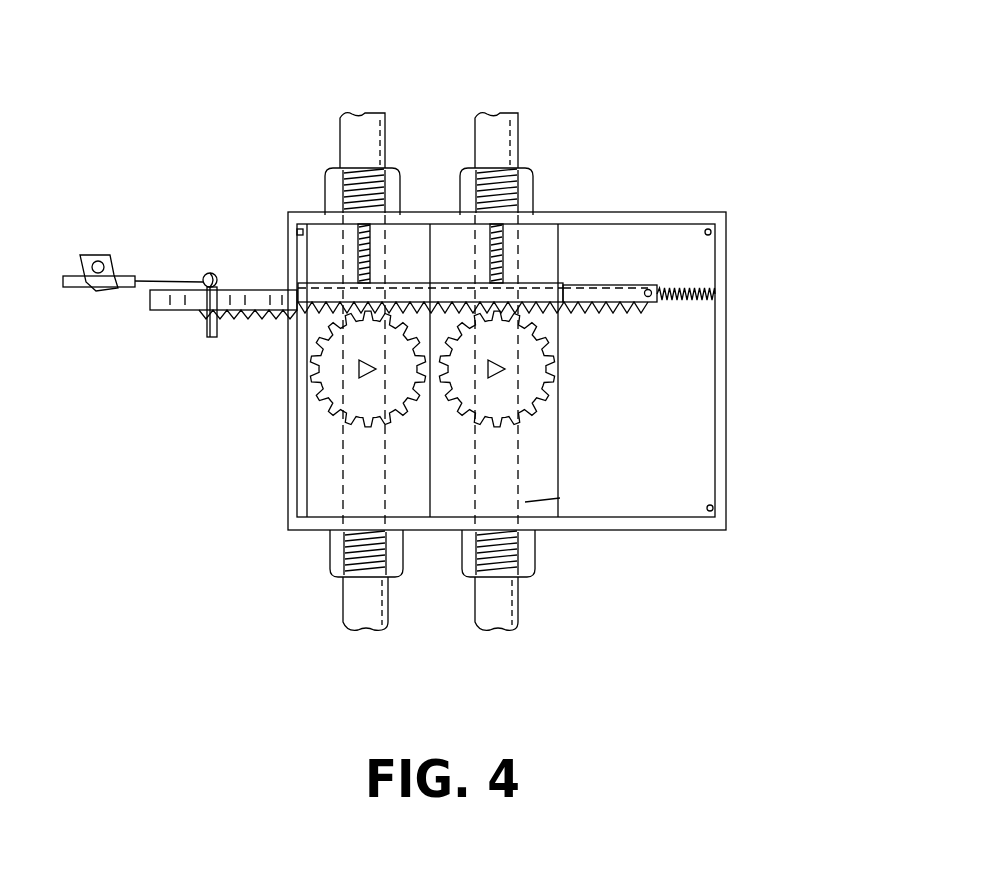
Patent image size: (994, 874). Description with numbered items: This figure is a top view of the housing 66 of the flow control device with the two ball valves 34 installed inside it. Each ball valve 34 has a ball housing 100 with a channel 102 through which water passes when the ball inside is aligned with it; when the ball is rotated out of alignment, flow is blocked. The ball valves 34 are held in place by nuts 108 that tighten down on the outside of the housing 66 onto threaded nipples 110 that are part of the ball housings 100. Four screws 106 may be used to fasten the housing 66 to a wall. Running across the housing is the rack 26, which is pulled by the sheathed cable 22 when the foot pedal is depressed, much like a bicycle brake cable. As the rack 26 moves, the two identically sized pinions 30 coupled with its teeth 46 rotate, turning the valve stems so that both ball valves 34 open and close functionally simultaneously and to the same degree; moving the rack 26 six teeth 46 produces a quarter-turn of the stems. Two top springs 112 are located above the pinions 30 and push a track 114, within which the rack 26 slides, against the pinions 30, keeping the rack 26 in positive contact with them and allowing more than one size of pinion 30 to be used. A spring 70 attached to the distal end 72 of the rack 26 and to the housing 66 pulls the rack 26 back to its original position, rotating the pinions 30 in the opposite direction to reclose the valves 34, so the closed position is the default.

The sheathed cable 22 is at (73, 288).
The rack 26 is at (601, 300).
The pinion 30 is at (325, 377).
The ball valve 34 is at (300, 466).
The teeth 46 is at (572, 313).
The housing 66 is at (727, 400).
The spring 70 is at (683, 304).
The distal end 72 is at (648, 286).
The ball housing 100 is at (417, 505).
The channel 102 is at (493, 460).
The screws 106 is at (711, 229).
The nuts 108 is at (330, 187).
The threaded nipples 110 is at (534, 190).
The top springs 112 is at (388, 258).
The track 114 is at (553, 281).